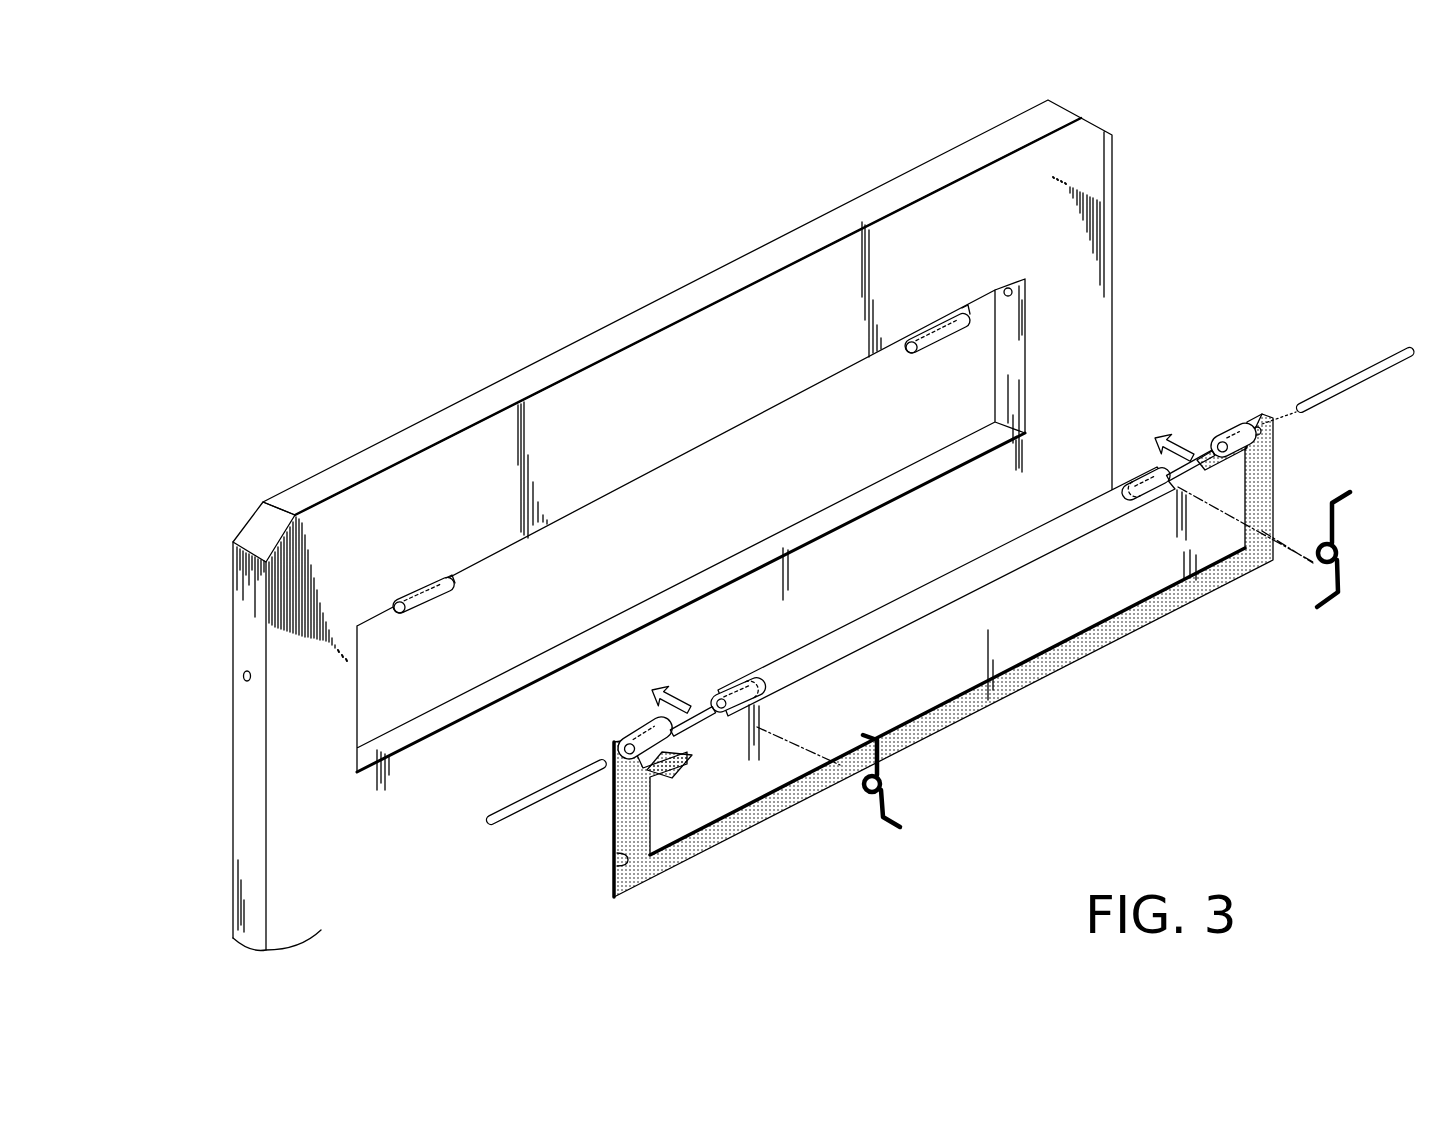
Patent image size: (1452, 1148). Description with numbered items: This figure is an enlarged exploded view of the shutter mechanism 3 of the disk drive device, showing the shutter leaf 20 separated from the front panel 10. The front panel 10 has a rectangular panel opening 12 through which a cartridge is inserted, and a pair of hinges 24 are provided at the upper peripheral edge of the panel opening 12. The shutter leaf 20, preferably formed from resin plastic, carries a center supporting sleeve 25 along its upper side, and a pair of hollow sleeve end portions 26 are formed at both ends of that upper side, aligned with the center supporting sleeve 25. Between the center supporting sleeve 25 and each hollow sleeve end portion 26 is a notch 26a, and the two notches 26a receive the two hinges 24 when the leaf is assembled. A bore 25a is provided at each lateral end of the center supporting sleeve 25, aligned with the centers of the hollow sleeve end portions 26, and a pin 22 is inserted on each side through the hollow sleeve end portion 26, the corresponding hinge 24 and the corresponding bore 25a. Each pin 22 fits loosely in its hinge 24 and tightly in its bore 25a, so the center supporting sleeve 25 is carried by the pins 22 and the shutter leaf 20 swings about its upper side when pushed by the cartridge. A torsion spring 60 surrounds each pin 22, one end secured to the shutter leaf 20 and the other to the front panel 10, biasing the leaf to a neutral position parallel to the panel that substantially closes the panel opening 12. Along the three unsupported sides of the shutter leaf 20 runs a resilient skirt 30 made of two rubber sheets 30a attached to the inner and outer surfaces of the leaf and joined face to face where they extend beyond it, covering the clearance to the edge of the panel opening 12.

The shutter mechanism 3 is at (1180, 275).
The front panel 10 is at (692, 306).
The panel opening 12 is at (650, 474).
The shutter leaf 20 is at (1022, 650).
The pin 22 is at (525, 800).
The hinge 24 is at (921, 348).
The center supporting sleeve 25 is at (915, 603).
The bore 25a is at (770, 694).
The hollow sleeve end portion 26 is at (690, 738).
The notch 26a is at (708, 720).
The resilient skirt 30 is at (535, 848).
The rubber sheet 30a is at (628, 858).
The torsion spring 60 is at (900, 827).